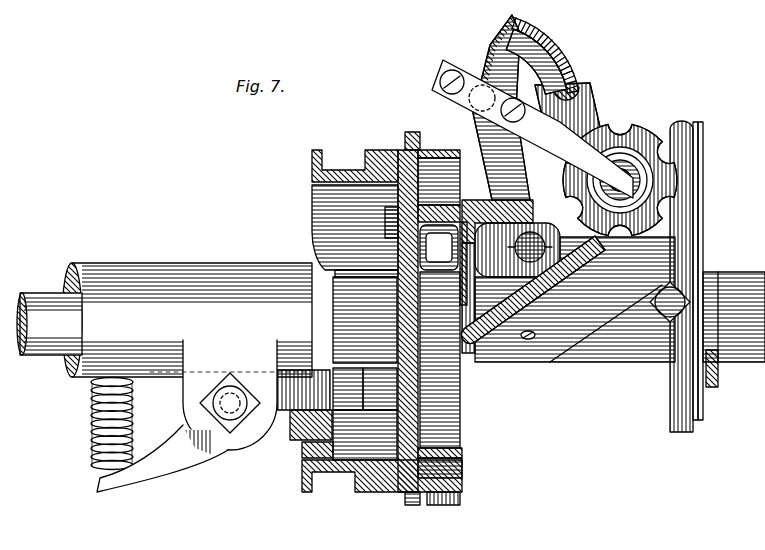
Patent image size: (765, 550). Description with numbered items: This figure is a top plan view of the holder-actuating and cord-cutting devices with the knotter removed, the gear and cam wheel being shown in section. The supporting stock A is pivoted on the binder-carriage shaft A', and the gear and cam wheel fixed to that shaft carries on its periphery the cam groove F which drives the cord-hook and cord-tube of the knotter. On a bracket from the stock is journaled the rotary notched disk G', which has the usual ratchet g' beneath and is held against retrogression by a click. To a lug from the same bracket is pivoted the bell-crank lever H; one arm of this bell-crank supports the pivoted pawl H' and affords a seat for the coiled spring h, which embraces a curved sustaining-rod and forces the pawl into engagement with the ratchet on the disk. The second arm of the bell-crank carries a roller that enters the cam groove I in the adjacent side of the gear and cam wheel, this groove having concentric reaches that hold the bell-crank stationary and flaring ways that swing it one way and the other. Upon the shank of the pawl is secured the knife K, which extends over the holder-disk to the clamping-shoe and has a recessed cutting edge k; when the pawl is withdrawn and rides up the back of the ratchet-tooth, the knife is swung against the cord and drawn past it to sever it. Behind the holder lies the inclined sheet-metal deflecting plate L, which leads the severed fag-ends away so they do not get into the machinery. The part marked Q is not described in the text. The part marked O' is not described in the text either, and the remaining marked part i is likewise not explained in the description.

The binder-carriage shaft A' is at (49, 324).
The supporting stock A is at (620, 312).
The cam groove F is at (382, 321).
The pin i is at (422, 273).
The sleeve O' is at (365, 368).
The cam groove I is at (460, 386).
The lever Q is at (203, 416).
The knife K is at (532, 129).
The bell-crank lever H is at (501, 107).
The pawl H' is at (543, 110).
The coiled spring h is at (537, 40).
The rotary notched disk G' is at (606, 159).
The recessed cutting edge k is at (640, 172).
The ratchet g' is at (665, 311).
The deflecting plate L is at (561, 299).